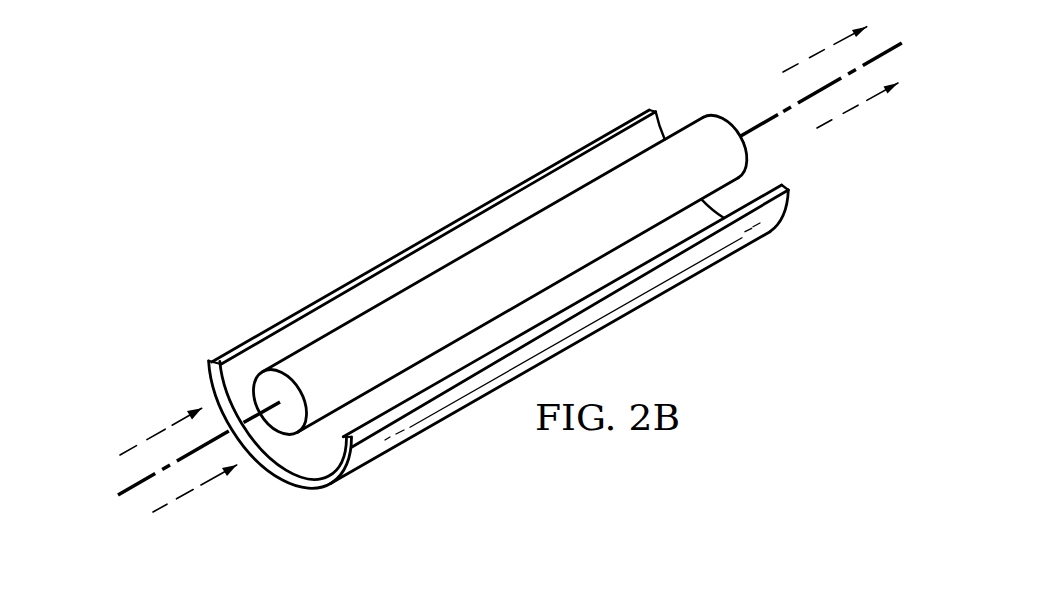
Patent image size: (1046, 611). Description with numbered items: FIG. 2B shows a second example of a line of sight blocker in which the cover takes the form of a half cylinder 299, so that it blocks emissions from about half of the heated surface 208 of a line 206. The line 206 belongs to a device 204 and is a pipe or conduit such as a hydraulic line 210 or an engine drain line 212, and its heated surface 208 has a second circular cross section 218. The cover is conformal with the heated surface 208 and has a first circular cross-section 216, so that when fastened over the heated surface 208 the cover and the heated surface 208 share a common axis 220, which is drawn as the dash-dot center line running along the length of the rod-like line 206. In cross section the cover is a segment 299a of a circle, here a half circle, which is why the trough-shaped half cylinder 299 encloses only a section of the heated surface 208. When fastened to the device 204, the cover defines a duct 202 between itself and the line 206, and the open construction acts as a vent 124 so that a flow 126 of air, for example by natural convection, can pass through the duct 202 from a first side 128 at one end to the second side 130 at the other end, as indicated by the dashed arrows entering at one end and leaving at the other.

The duct 202 is at (238, 373).
The half cylinder 299 is at (423, 241).
The segment of a circle 299a is at (340, 287).
The heated surface 208 is at (542, 228).
The device 204 is at (581, 299).
The line 206 is at (581, 299).
The hydraulic line 210 is at (581, 299).
The engine drain line 212 is at (675, 310).
The second circular cross section 218 is at (752, 158).
The second side 130 is at (802, 203).
The axis 220 is at (140, 478).
The flow 126 is at (155, 433).
The first side 128 is at (263, 485).
The first circular cross-section 216 is at (697, 80).
The vent 124 is at (748, 80).